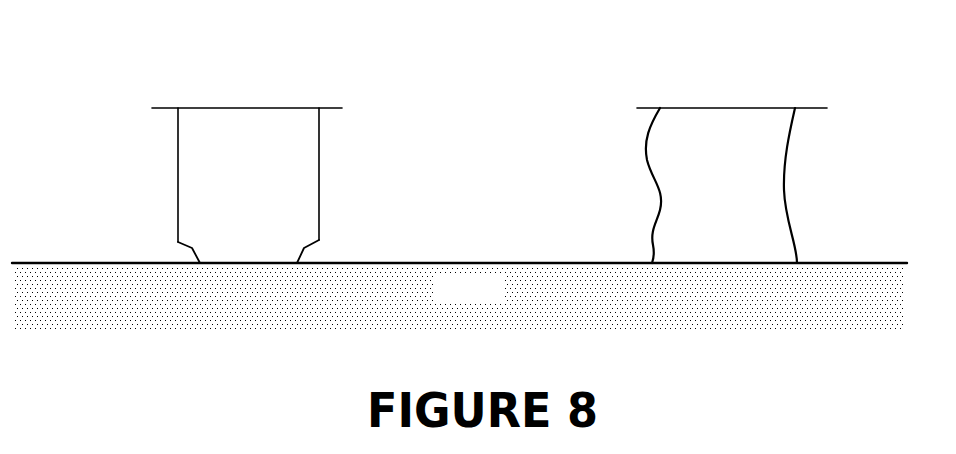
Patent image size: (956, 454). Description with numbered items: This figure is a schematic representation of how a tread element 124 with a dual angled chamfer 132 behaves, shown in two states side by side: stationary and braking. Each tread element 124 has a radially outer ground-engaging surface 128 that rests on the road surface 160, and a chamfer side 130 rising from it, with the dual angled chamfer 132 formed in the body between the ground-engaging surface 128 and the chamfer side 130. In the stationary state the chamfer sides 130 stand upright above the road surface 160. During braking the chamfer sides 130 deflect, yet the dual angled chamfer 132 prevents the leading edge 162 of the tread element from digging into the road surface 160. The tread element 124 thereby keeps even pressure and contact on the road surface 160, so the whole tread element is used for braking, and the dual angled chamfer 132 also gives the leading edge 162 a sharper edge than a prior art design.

The tread element 124 is at (313, 108).
The ground-engaging surface 128 is at (247, 263).
The chamfer side 130 is at (178, 160).
The dual angled chamfer 132 is at (192, 248).
The road surface 160 is at (852, 263).
The leading edge 162 is at (800, 263).